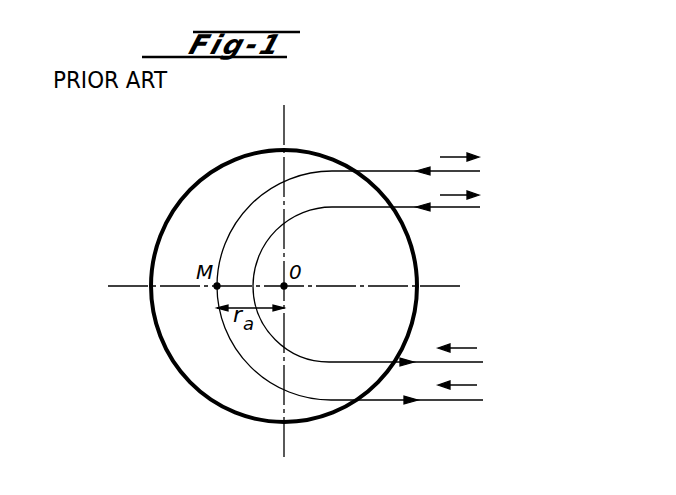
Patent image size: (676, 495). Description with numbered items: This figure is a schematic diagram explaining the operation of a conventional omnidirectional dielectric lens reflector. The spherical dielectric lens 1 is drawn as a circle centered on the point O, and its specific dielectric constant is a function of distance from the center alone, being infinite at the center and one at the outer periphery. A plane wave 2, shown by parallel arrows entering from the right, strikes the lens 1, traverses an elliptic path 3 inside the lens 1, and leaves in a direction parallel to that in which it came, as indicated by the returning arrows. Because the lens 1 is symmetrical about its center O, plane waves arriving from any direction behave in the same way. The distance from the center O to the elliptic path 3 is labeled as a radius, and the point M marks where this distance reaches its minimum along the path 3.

The spherical dielectric lens 1 is at (333, 107).
The plane wave 2 is at (480, 171).
The elliptic path 3 is at (260, 255).